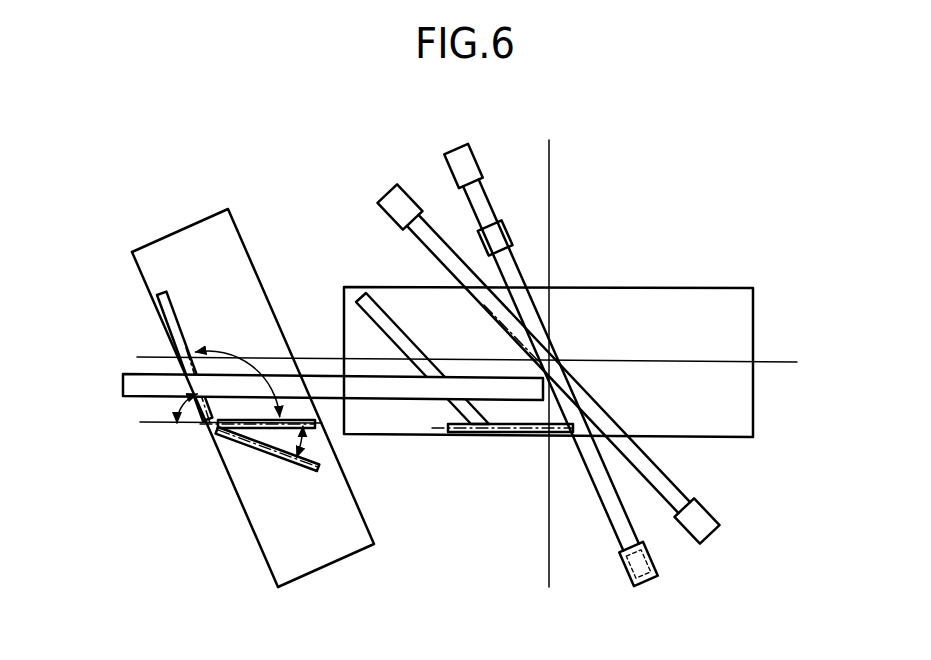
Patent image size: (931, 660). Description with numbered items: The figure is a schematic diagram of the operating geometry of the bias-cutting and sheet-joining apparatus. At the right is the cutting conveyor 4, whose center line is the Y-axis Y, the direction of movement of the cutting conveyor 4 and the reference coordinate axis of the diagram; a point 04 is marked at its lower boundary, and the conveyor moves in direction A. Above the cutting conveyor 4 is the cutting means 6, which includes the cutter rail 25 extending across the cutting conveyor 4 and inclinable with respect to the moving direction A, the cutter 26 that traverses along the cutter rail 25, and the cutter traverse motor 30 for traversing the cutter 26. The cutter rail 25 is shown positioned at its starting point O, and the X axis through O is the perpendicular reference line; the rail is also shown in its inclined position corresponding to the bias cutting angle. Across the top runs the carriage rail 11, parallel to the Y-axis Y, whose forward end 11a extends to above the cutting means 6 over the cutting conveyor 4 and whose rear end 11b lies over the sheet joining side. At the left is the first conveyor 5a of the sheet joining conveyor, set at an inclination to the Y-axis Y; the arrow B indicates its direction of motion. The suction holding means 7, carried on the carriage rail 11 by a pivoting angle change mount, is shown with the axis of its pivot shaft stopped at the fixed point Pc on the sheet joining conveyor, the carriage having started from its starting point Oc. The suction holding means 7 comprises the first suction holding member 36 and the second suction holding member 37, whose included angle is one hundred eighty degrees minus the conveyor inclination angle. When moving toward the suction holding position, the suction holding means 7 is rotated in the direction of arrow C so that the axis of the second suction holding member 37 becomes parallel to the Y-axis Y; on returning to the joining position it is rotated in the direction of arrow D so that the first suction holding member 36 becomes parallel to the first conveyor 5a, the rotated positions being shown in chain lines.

The cutting conveyor 4 is at (687, 289).
The housing bottom reference 04 is at (478, 436).
The first conveyor 5a is at (210, 245).
The cutting means 6 is at (530, 258).
The suction holding means 7 is at (228, 441).
The carriage rail 11 is at (318, 376).
The forward end of the carriage rail 11a is at (532, 440).
The rear end of the carriage rail 11b is at (120, 380).
The cutter rail 25 is at (486, 200).
The cutter 26 is at (508, 230).
The cutter traverse motor 30 is at (620, 565).
The first suction holding member 36 is at (413, 255).
The second suction holding member 37 is at (287, 432).
The moving direction of the cutting conveyor A is at (764, 351).
The direction B is at (328, 572).
The arrow C is at (190, 313).
The arrow D is at (173, 300).
The starting point of the cutter rail O is at (552, 356).
The starting point of the carriage Oc is at (146, 398).
The fixed stop point on the sheet joining conveyor Pc is at (206, 430).
The X axis X is at (546, 344).
The Y-axis Y is at (138, 423).